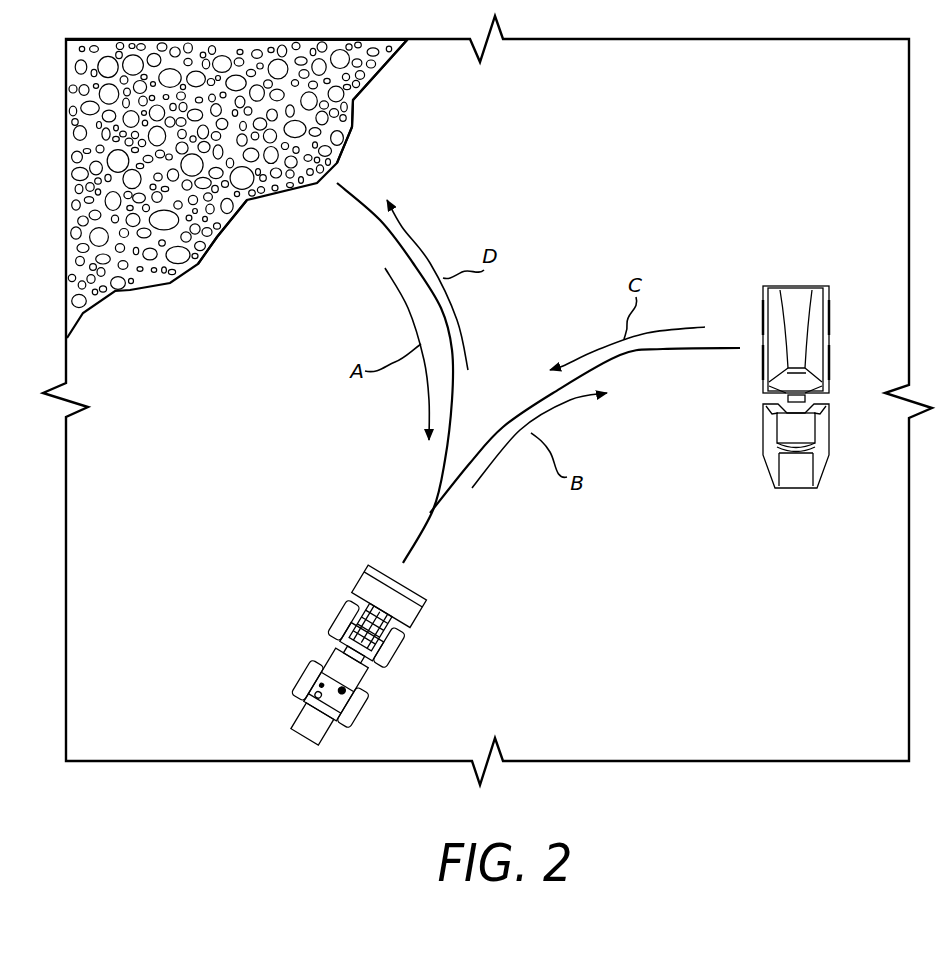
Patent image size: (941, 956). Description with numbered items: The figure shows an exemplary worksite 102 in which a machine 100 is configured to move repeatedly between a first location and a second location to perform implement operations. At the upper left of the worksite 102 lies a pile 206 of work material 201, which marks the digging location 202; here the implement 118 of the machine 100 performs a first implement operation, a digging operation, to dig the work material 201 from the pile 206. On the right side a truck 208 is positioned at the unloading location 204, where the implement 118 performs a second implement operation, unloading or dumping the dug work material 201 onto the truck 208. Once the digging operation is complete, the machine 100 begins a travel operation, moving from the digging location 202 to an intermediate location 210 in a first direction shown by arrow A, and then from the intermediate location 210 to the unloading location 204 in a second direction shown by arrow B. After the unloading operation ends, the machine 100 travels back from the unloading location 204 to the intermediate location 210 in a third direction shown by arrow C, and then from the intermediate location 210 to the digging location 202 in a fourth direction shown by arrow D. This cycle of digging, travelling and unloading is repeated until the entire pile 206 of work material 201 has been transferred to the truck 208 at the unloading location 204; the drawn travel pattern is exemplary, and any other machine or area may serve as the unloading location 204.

The machine 100 is at (393, 652).
The worksite 102 is at (534, 85).
The implement 118 is at (419, 613).
The work material 201 is at (163, 284).
The digging location 202 is at (384, 106).
The unloading location 204 is at (833, 338).
The pile 206 is at (238, 222).
The truck 208 is at (832, 333).
The intermediate location 210 is at (262, 727).